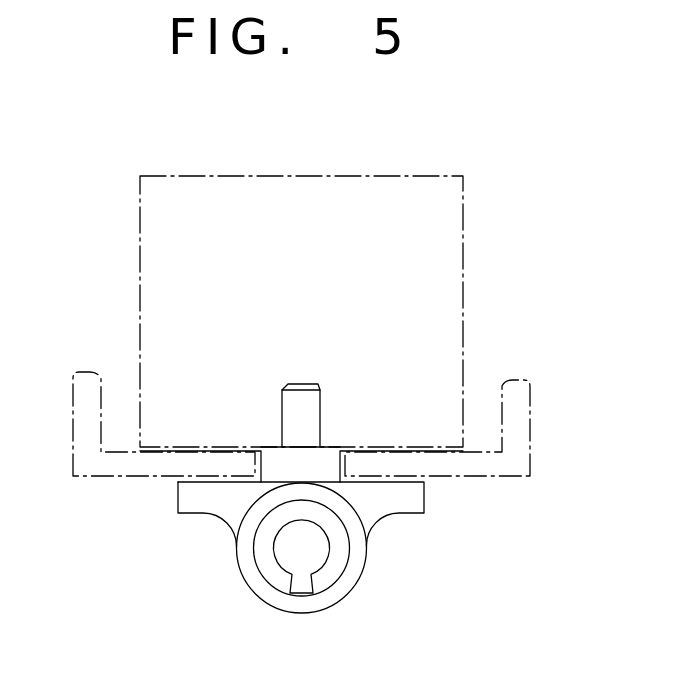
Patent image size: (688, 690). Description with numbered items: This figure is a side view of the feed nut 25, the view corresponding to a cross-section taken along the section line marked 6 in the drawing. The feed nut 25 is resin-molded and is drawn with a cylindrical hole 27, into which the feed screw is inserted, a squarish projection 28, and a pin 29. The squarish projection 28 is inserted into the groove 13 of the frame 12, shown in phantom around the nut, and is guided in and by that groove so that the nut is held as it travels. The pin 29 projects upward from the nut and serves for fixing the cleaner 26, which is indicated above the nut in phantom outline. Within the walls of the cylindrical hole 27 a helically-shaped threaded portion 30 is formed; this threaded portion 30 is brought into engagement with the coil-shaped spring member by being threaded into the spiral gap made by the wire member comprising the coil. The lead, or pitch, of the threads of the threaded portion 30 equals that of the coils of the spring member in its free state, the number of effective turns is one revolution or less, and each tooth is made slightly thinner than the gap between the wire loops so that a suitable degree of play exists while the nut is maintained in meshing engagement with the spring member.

The section line for FIG. 6 is at (305, 162).
The frame 12 is at (143, 478).
The groove 13 is at (263, 465).
The feed nut 25 is at (436, 500).
The cleaner 26 is at (463, 210).
The cylindrical hole 27 is at (355, 563).
The squarish projection 28 is at (327, 457).
The pin 29 is at (312, 392).
The threaded portion 30 is at (280, 553).